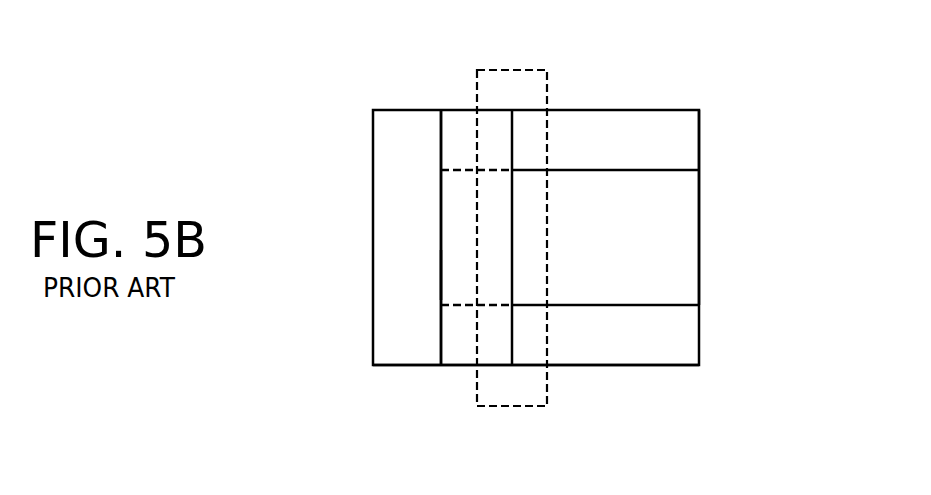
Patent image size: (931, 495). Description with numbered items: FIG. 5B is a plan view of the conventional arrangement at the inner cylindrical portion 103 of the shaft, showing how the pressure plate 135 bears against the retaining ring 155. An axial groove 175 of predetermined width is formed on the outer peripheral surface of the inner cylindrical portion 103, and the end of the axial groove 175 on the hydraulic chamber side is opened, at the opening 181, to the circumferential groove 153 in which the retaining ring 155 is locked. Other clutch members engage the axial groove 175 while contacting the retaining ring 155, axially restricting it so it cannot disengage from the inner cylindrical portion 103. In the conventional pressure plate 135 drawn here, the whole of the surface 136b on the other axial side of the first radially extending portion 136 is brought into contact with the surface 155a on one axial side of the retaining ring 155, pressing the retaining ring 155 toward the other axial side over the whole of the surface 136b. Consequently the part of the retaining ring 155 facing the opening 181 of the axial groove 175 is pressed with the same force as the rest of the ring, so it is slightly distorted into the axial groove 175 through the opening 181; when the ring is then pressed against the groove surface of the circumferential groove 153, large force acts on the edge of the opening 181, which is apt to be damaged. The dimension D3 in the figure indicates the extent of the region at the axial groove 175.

The pressure plate 135 is at (392, 98).
The first radially extending portion 136 is at (388, 168).
The surface axially on the other side of the first radially extending portion 136b is at (441, 145).
The retaining ring 155 is at (457, 135).
The surface axially on one side of the retaining ring 155a is at (441, 272).
The circumferential groove 153 is at (452, 367).
The inner cylindrical portion 103 is at (680, 140).
The axial groove 175 is at (673, 224).
The opening of the axial groove 181 is at (533, 213).
The distance D3 is at (548, 378).